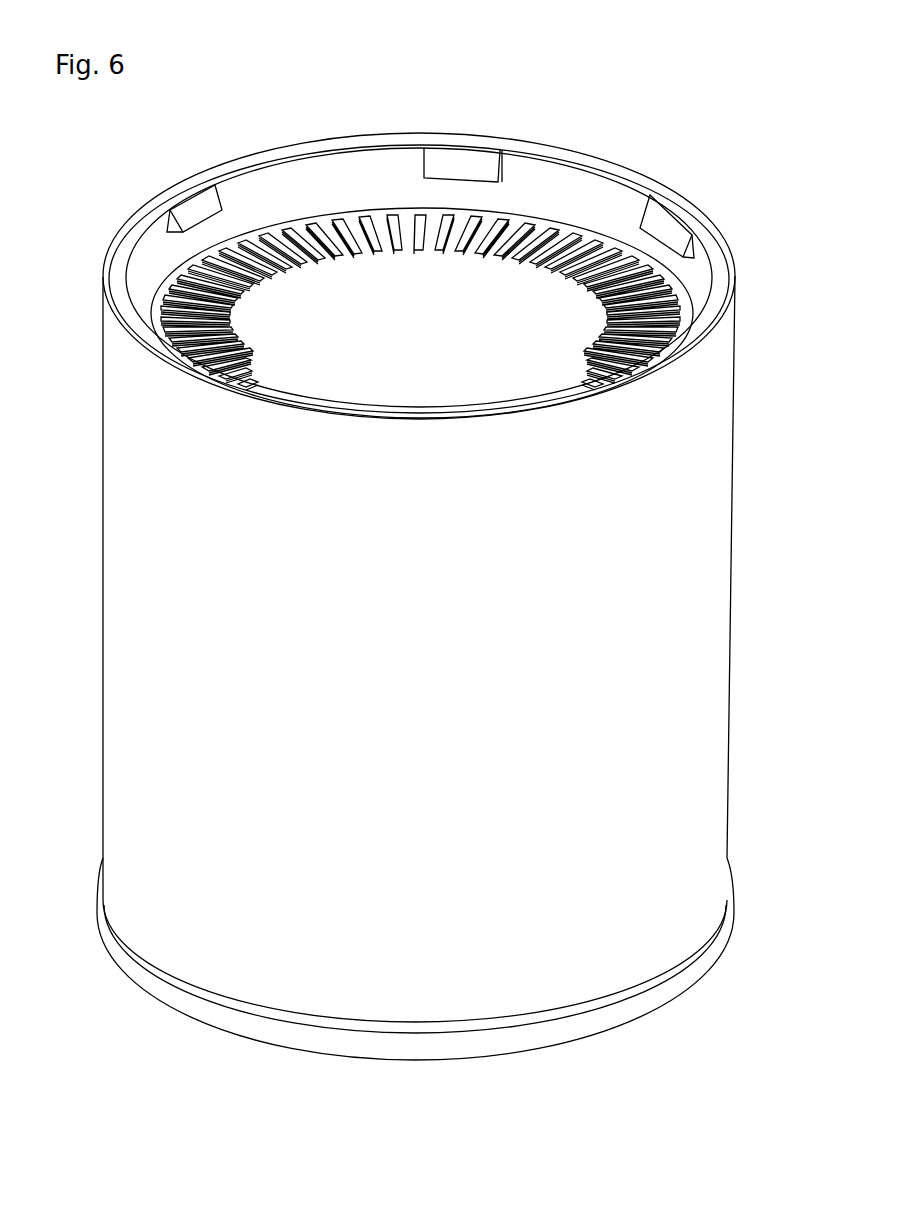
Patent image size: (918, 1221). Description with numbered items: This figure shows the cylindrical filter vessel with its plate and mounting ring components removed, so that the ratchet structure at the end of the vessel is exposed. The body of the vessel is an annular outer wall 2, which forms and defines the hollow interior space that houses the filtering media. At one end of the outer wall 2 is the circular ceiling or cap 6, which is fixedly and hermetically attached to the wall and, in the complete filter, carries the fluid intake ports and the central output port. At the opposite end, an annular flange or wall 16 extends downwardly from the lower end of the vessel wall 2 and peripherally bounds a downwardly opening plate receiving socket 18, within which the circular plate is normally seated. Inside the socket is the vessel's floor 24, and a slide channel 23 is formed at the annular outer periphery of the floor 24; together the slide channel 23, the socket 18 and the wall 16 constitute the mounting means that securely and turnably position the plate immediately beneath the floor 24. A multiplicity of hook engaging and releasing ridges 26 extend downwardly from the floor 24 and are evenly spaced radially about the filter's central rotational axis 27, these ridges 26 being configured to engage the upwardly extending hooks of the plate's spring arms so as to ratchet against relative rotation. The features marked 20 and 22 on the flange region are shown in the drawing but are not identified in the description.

The annular outer wall 2 is at (335, 671).
The circular ceiling or cap 6 is at (167, 993).
The annular flange or wall 16 is at (362, 140).
The plate receiving socket 18 is at (333, 188).
The locking tabs 20 is at (200, 207).
The tab side faces 22 is at (178, 243).
The slide channel 23 is at (597, 237).
The floor 24 is at (575, 345).
The hook engaging and releasing ridges 26 is at (657, 310).
The central rotational axis 27 is at (420, 332).